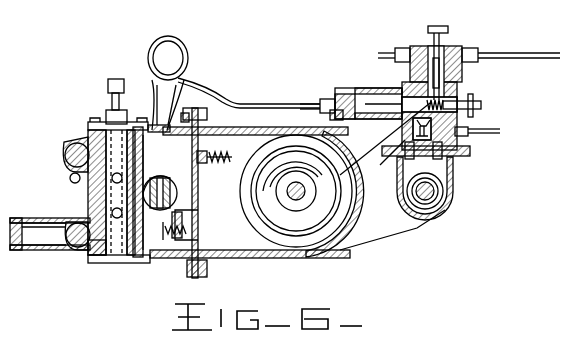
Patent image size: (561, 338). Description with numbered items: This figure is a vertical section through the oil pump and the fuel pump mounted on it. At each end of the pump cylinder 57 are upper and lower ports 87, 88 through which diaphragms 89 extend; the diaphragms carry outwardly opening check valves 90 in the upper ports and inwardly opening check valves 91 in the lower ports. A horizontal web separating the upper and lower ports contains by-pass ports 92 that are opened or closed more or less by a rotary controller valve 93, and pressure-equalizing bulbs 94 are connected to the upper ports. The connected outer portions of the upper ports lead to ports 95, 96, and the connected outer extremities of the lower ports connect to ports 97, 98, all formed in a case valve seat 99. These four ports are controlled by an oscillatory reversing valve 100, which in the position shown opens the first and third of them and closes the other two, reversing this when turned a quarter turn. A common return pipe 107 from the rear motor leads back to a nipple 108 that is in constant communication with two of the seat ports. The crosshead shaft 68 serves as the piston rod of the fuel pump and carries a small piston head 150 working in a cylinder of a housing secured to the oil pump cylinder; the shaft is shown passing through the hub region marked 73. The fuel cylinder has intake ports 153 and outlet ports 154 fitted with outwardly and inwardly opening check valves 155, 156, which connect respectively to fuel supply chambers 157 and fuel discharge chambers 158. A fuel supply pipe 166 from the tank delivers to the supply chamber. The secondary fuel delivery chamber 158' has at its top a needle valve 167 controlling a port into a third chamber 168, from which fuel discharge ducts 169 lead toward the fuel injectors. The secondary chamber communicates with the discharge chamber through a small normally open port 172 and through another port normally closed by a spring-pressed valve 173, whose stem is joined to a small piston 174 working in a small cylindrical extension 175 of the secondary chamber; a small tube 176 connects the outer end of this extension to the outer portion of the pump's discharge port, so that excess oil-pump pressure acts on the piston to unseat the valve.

The pump cylinder 57 is at (317, 252).
The crosshead shaft 68 is at (425, 196).
The pulley shaft 73 is at (296, 199).
The upper ports 87 is at (236, 145).
The lower ports 88 is at (241, 245).
The diaphragms 89 is at (198, 248).
The outwardly opening check valves 90 is at (192, 160).
The inwardly opening check valves 91 is at (183, 243).
The by-pass ports 92 is at (160, 210).
The rotary controller valve 93 is at (150, 200).
The pressure-equalizing bulbs 94 is at (185, 64).
The port 95 is at (92, 150).
The port 96 is at (70, 178).
The port 97 is at (94, 244).
The port 98 is at (78, 240).
The case valve seat 99 is at (66, 144).
The oscillatory reversing valve 100 is at (115, 137).
The common return pipe 107 is at (12, 223).
The nipple 108 is at (40, 240).
The small piston head 150 is at (432, 209).
The intake ports 153 is at (447, 183).
The outlet ports 154 is at (381, 223).
The outwardly opening check valves 155 is at (445, 170).
The inwardly opening check valves 156 is at (403, 180).
The fuel supply chambers 157 is at (470, 152).
The fuel discharge chambers 158 is at (332, 185).
The secondary fuel delivery chamber 158' is at (468, 93).
The fuel supply pipe 166 is at (478, 130).
The needle valve 167 is at (448, 31).
The third chamber 168 is at (430, 82).
The fuel discharge ducts 169 is at (392, 53).
The small normally open port 172 is at (393, 168).
The spring-pressed valve 173 is at (395, 120).
The small piston 174 is at (340, 84).
The small cylindrical extension 175 is at (360, 95).
The small tube 176 is at (282, 103).